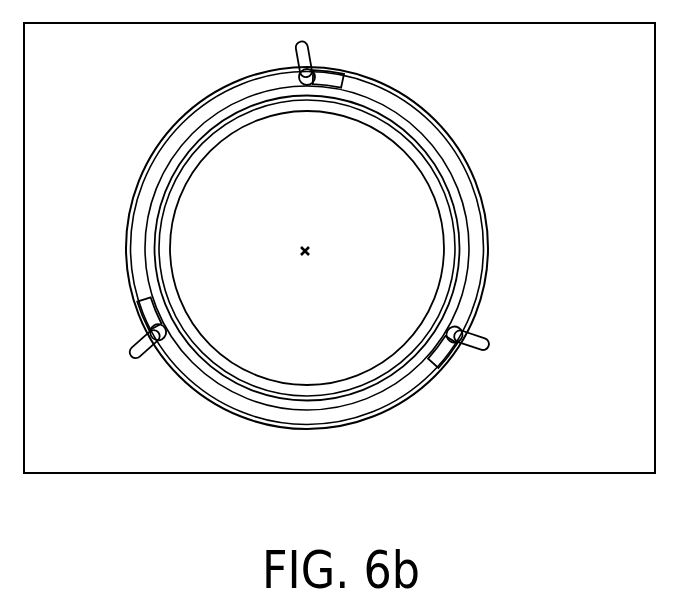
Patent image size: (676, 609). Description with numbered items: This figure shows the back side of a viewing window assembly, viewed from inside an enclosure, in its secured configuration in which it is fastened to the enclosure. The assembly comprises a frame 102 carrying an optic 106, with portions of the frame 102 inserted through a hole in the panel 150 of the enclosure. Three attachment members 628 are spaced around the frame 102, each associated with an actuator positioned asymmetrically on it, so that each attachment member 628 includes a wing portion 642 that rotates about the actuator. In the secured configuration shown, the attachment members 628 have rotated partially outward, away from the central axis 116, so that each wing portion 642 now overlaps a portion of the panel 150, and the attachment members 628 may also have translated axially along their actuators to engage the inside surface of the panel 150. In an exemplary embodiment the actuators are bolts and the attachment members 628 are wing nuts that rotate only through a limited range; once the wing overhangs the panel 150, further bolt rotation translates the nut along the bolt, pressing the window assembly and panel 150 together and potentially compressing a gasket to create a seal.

The panel 150 is at (339, 248).
The frame 102 is at (300, 425).
The optic 106 is at (392, 232).
The central axis 116 is at (303, 262).
The wing portion 642 is at (490, 337).
The attachment member 628 is at (462, 342).